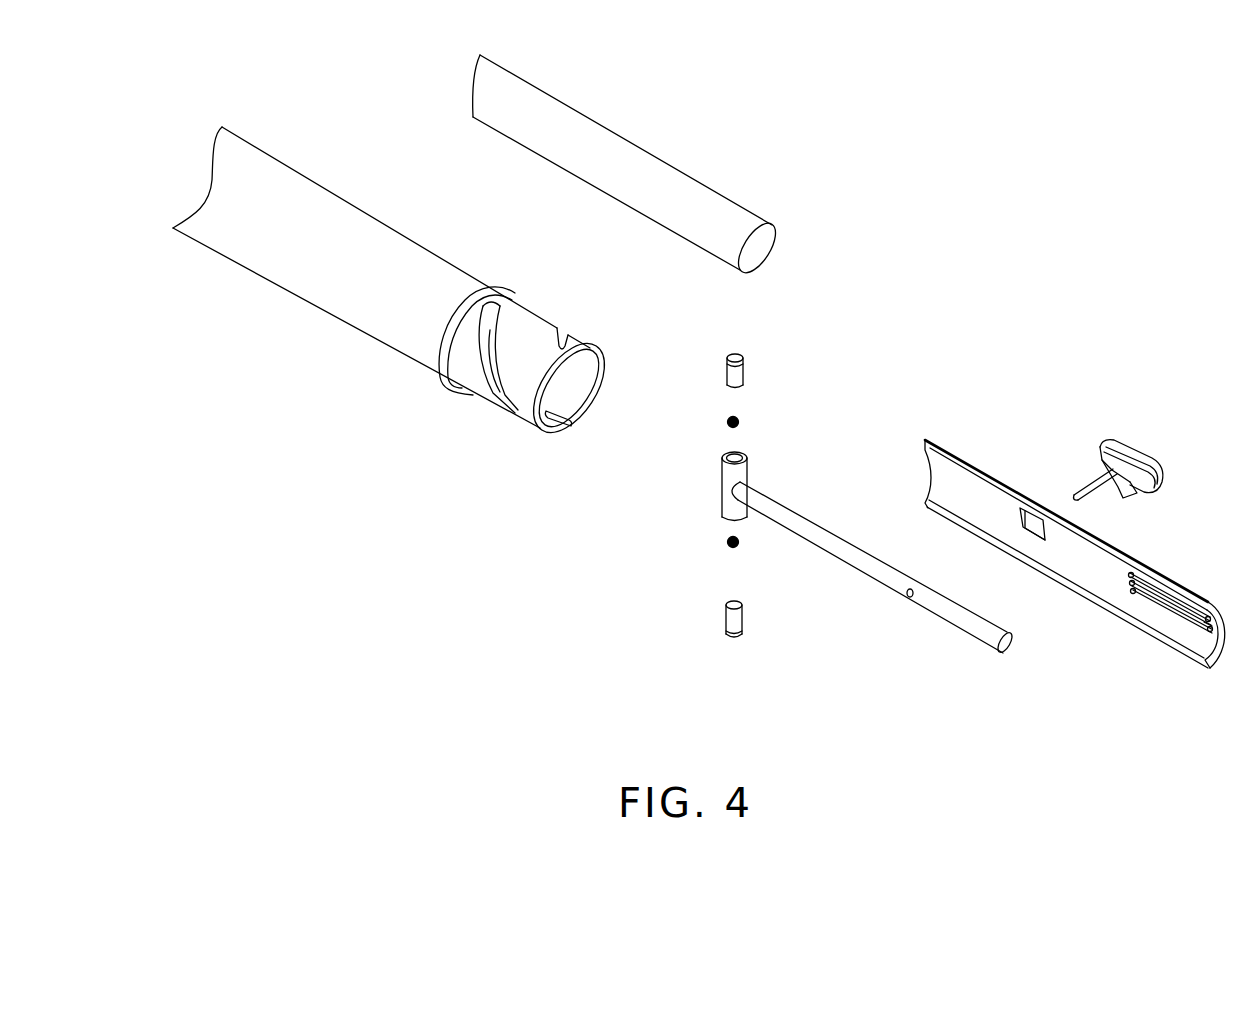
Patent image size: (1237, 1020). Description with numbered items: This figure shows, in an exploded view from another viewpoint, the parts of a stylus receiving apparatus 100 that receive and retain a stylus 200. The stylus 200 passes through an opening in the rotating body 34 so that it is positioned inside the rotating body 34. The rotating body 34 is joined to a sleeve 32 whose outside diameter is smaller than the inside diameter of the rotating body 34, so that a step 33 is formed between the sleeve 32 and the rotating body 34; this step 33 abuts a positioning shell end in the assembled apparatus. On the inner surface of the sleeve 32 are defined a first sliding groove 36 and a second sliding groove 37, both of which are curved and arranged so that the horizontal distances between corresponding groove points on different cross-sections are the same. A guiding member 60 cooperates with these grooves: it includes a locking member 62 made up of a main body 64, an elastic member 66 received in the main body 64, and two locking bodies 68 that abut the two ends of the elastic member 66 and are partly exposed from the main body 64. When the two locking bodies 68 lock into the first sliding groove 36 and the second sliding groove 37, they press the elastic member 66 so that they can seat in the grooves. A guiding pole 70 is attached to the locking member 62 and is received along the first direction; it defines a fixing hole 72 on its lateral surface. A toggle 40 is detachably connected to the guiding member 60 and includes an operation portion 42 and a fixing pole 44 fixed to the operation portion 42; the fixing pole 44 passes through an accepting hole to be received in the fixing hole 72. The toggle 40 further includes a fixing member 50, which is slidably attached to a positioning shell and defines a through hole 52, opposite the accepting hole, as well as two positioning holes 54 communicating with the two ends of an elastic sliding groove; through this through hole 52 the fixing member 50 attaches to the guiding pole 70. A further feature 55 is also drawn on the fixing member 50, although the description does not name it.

The stylus 200 is at (605, 142).
The rotating body 34 is at (398, 286).
The sleeve 32 is at (527, 328).
The first sliding groove 36 is at (563, 345).
The step 33 is at (443, 373).
The second sliding groove 37 is at (488, 305).
The stylus receiving apparatus 100 is at (893, 372).
The guiding member 60 is at (810, 523).
The locking member 62 is at (662, 355).
The main body 64 is at (728, 473).
The elastic member 66 is at (728, 420).
The locking bodies 68 is at (725, 372).
The guiding pole 70 is at (873, 587).
The fixing hole 72 is at (908, 597).
The fixing member 50 is at (1075, 560).
The through hole 52 is at (1037, 528).
The positioning holes 54 is at (1133, 588).
The slot end 55 is at (1203, 627).
The toggle 40 is at (1147, 425).
The operation portion 42 is at (1133, 453).
The fixing pole 44 is at (1095, 443).